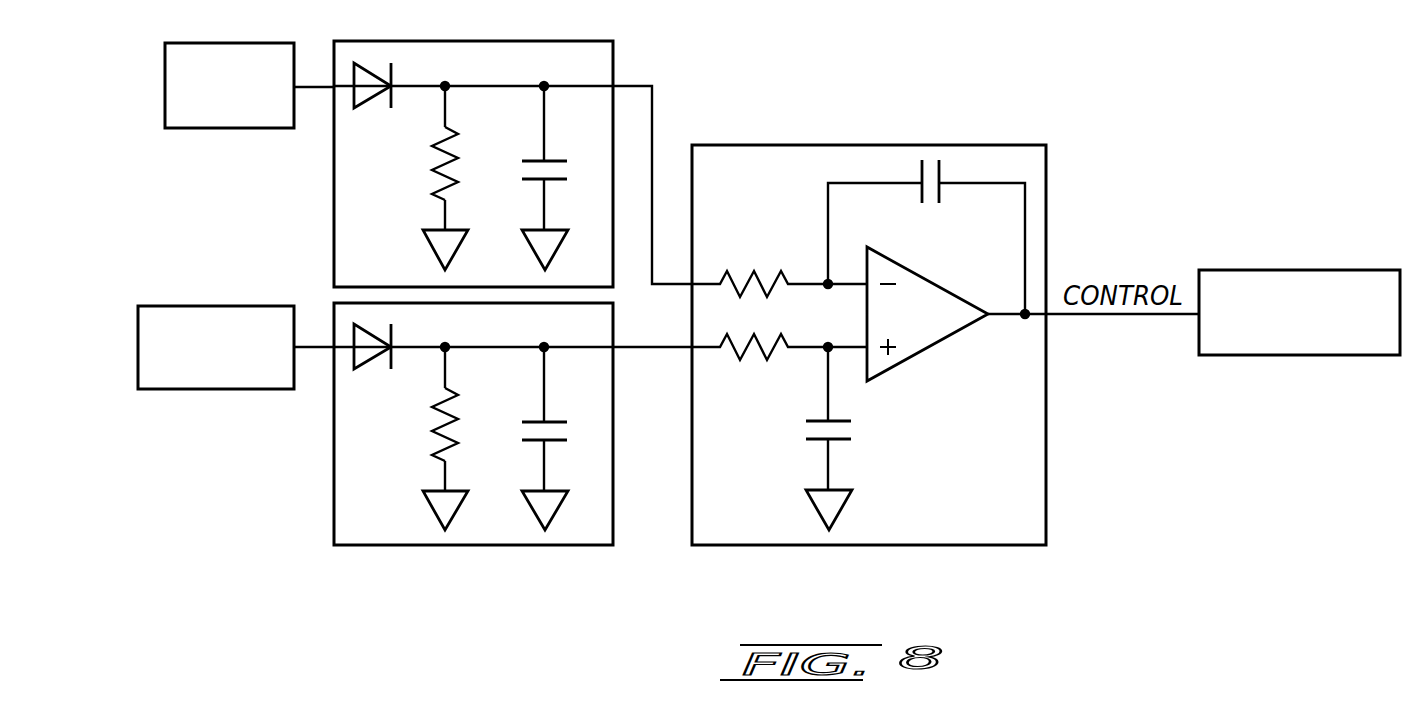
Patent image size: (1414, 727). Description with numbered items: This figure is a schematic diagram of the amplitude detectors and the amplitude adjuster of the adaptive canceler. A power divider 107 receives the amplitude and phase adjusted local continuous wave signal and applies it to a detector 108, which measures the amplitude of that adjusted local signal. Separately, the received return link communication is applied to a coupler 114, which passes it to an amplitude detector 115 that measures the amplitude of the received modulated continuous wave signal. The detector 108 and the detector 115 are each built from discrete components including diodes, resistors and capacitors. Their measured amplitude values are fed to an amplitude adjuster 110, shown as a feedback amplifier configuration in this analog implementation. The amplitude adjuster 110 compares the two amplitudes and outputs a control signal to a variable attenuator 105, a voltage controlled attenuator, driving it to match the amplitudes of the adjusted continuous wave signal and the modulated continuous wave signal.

The variable attenuator 105 is at (1322, 270).
The power divider 107 is at (165, 83).
The detector 108 is at (334, 216).
The amplitude adjuster 110 is at (992, 145).
The coupler 114 is at (194, 390).
The amplitude detector 115 is at (334, 488).